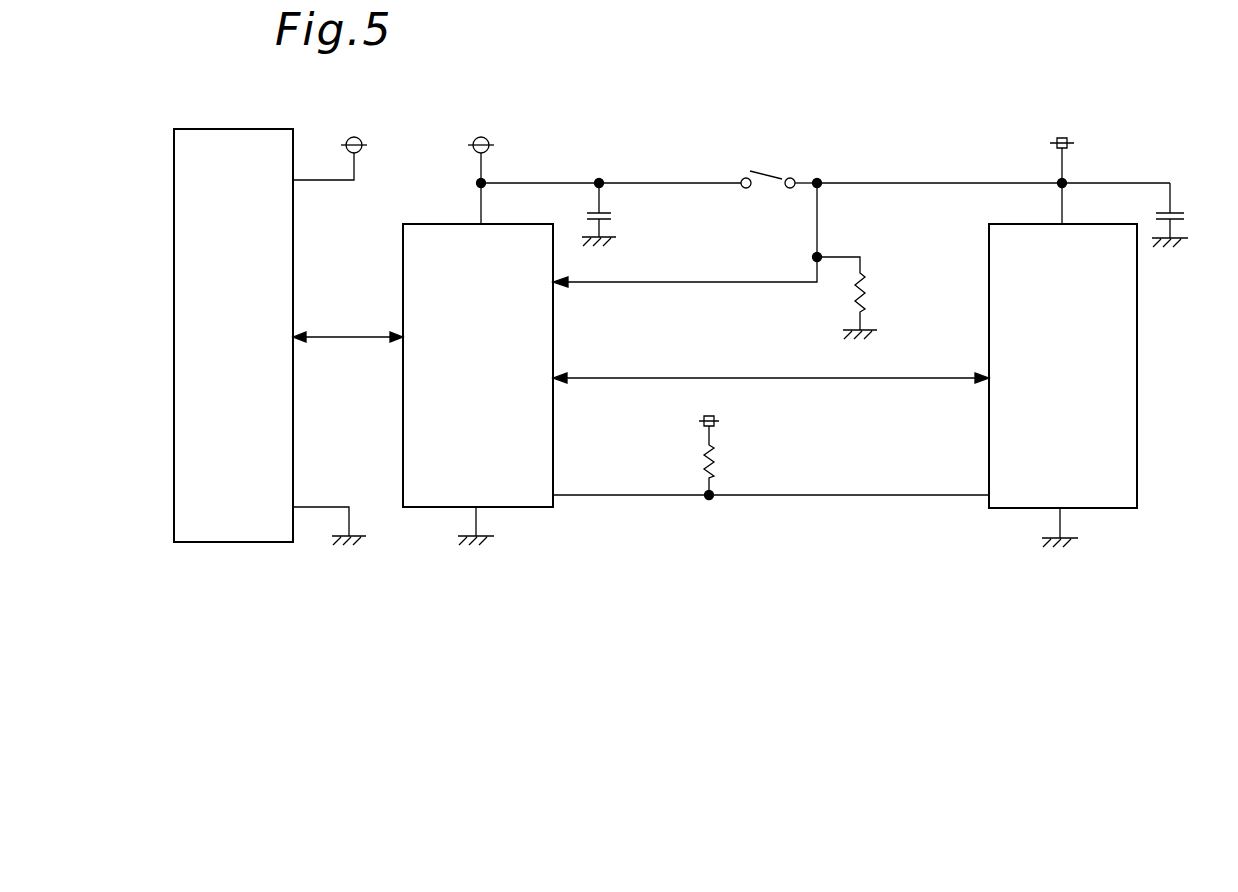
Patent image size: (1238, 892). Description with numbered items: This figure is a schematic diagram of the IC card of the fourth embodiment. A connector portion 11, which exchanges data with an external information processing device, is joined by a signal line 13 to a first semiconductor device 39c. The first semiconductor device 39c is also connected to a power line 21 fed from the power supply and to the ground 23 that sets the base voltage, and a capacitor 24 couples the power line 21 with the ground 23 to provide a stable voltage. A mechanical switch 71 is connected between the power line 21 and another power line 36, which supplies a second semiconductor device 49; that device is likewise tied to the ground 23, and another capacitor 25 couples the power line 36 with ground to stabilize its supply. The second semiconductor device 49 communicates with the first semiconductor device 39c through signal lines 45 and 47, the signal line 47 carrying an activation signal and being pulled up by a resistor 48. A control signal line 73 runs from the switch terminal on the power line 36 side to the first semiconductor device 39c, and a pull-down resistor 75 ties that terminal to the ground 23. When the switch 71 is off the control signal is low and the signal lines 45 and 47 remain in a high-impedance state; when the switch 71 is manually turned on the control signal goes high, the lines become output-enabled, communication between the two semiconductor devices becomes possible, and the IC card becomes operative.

The connector portion 11 is at (293, 264).
The signal line 13 is at (350, 339).
The power line 21 is at (386, 166).
The ground 23 is at (365, 540).
The capacitor 24 is at (617, 214).
The capacitor 25 is at (1184, 215).
The power line 36 is at (1023, 180).
The first semiconductor device 39c is at (553, 325).
The signal line 45 is at (897, 378).
The signal line 47 is at (898, 495).
The resistor 48 is at (699, 465).
The second semiconductor device 49 is at (1137, 340).
The mechanical switch 71 is at (767, 185).
The control signal line 73 is at (687, 283).
The pull-down resistor 75 is at (867, 287).